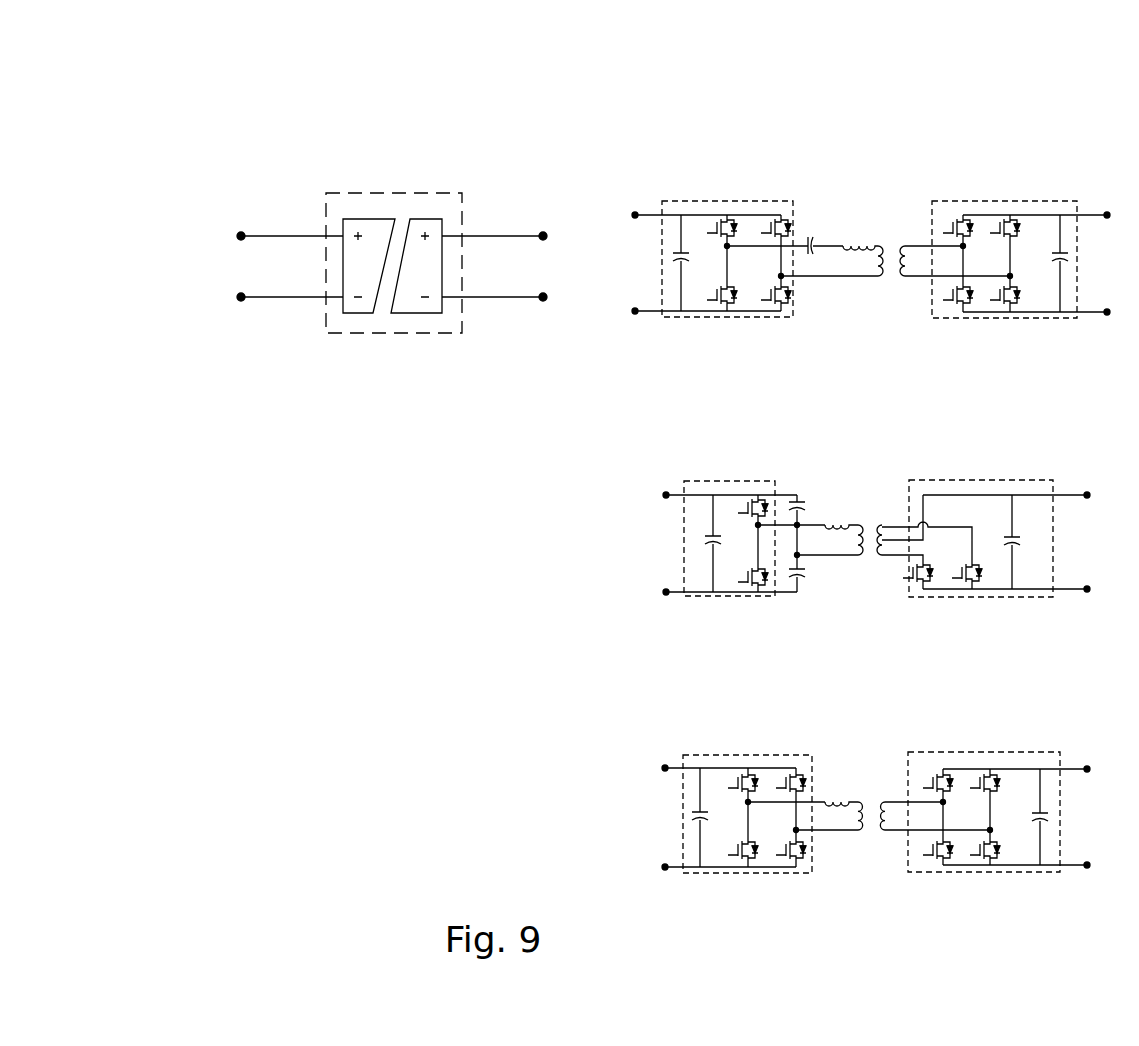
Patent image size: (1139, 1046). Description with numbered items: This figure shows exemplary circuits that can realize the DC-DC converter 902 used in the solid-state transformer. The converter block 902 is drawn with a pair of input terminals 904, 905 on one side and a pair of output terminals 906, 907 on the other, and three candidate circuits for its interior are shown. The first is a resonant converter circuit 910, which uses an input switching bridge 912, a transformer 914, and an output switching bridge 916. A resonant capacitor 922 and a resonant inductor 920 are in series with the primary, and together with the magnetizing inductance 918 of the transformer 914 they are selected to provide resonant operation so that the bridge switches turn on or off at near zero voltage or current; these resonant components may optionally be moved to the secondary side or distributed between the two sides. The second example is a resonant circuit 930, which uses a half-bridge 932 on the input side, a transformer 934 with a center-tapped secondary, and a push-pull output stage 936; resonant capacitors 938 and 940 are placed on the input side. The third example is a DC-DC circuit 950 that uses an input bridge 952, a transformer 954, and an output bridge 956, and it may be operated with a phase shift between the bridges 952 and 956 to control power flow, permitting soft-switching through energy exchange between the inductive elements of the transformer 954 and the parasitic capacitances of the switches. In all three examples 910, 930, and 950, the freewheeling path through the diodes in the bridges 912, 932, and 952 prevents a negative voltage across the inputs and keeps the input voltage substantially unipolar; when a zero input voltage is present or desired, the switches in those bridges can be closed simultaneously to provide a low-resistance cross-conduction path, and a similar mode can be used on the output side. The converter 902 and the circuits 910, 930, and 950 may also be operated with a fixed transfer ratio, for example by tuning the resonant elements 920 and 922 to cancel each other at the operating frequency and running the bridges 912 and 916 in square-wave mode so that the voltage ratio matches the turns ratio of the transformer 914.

The DC-DC converter 902 is at (365, 185).
The positive input terminal 904 is at (237, 224).
The negative input terminal 905 is at (238, 308).
The positive output terminal 906 is at (542, 224).
The negative output terminal 907 is at (542, 308).
The resonant converter circuit 910 is at (868, 187).
The input switching bridge 912 is at (745, 198).
The transformer 914 is at (908, 228).
The output switching bridge 916 is at (992, 198).
The magnetizing inductance 918 is at (870, 260).
The resonant inductor 920 is at (852, 228).
The resonant capacitor 922 is at (812, 222).
The resonant circuit 930 is at (864, 491).
The half-bridge 932 is at (745, 475).
The transformer with secondary center-tapped 934 is at (882, 517).
The push-pull output stage 936 is at (988, 478).
The resonant capacitor 938 is at (807, 492).
The resonant capacitor 940 is at (807, 573).
The DC-DC circuit 950 is at (873, 765).
The input bridge 952 is at (765, 748).
The transformer 954 is at (880, 787).
The output bridge 956 is at (1010, 748).